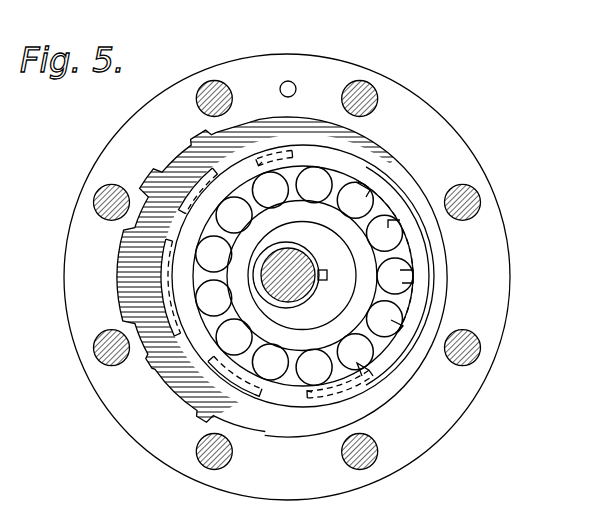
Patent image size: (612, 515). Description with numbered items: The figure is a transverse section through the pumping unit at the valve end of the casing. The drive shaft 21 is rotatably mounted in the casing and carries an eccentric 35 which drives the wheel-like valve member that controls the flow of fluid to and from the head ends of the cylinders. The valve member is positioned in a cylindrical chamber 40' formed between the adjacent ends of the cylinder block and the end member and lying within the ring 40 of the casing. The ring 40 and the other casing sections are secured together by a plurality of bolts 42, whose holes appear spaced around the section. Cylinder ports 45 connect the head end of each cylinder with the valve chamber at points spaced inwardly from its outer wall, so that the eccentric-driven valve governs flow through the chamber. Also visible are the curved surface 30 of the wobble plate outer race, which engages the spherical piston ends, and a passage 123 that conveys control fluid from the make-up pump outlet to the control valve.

The ring 40 is at (308, 277).
The bolts 42 is at (378, 100).
The passage 123 is at (289, 81).
The cylindrical chamber 40' is at (267, 290).
The eccentric 35 is at (335, 298).
The drive shaft 21 is at (297, 262).
The cylinder ports 45 is at (178, 222).
The curved surface 30 is at (306, 400).